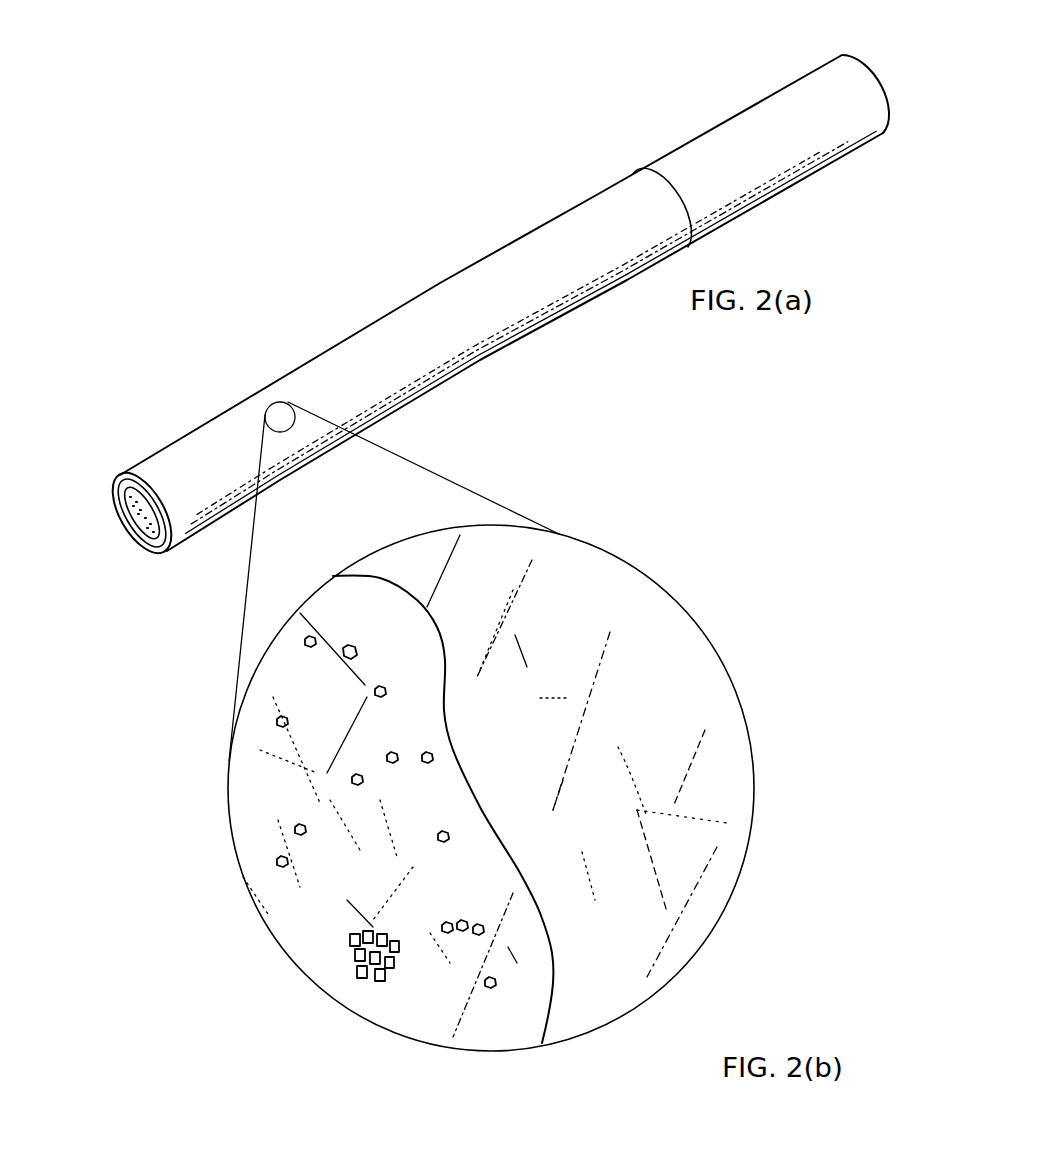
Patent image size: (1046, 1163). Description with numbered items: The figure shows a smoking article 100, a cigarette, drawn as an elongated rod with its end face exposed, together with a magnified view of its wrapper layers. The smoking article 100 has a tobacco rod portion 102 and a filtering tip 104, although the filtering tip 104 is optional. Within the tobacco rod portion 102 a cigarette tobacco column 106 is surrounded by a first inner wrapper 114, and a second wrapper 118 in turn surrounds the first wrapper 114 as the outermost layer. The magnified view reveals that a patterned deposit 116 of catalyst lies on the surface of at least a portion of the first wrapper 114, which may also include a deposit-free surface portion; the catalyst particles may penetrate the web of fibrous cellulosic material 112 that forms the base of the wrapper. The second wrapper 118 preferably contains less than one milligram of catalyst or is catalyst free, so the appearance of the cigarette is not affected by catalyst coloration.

In FIG. 2a, the smoking article 100 is at (536, 112).
In FIG. 2a, the tobacco rod portion 102 is at (405, 338).
In FIG. 2a, the filtering tip 104 is at (753, 138).
In FIG. 2a, the tobacco column 106 is at (135, 540).
In FIG. 2b, the web of fibrous cellulosic material 112 is at (310, 773).
In FIG. 2a, the first inner wrapper 114 is at (118, 520).
In FIG. 2b, the first inner wrapper 114 is at (282, 927).
In FIG. 2b, the patterned deposit 116 is at (278, 725).
In FIG. 2a, the second wrapper 118 is at (113, 477).
In FIG. 2b, the second wrapper 118 is at (673, 645).